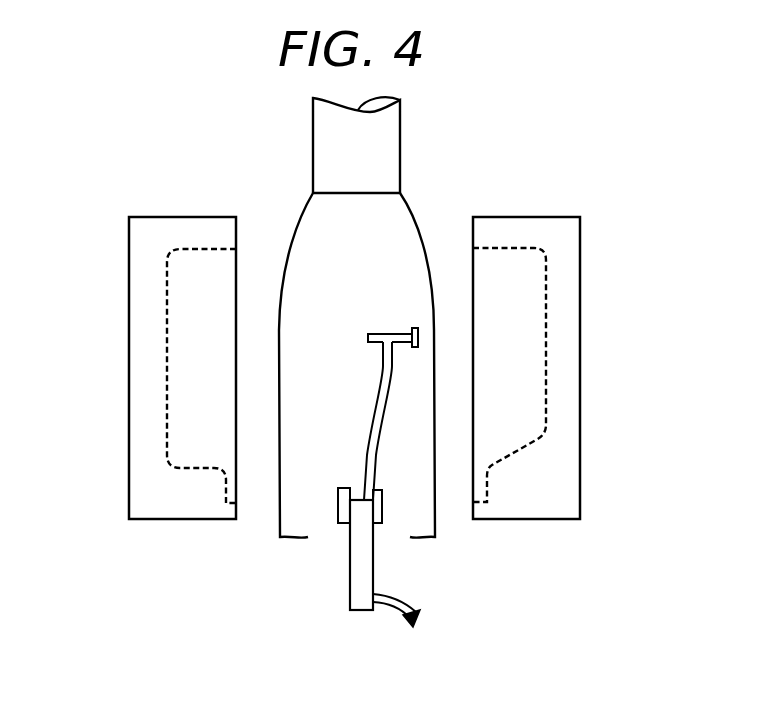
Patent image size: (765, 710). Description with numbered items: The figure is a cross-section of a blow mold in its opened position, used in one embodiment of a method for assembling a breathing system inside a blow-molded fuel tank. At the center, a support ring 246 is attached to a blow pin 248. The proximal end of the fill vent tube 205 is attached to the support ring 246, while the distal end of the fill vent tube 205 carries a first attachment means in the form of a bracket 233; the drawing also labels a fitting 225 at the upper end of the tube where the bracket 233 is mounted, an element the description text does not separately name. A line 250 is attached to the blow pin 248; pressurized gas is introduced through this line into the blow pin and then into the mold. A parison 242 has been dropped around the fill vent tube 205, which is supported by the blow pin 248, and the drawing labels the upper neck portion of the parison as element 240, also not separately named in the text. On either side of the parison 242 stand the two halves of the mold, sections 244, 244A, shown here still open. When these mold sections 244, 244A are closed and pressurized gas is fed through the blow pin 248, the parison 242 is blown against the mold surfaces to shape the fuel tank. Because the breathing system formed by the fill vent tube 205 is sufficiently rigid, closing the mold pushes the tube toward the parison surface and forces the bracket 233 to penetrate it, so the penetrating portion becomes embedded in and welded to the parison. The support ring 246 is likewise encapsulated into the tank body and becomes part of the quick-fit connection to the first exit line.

The fill vent tube 205 is at (376, 403).
The tube fitting 225 is at (368, 333).
The first attachment bracket 233 is at (390, 333).
The container neck 240 is at (402, 157).
The parison 242 is at (300, 215).
The mold section 244 is at (139, 289).
The mold section 244A is at (575, 371).
The support ring 246 is at (340, 523).
The blow pin 248 is at (366, 561).
The line 250 is at (387, 607).